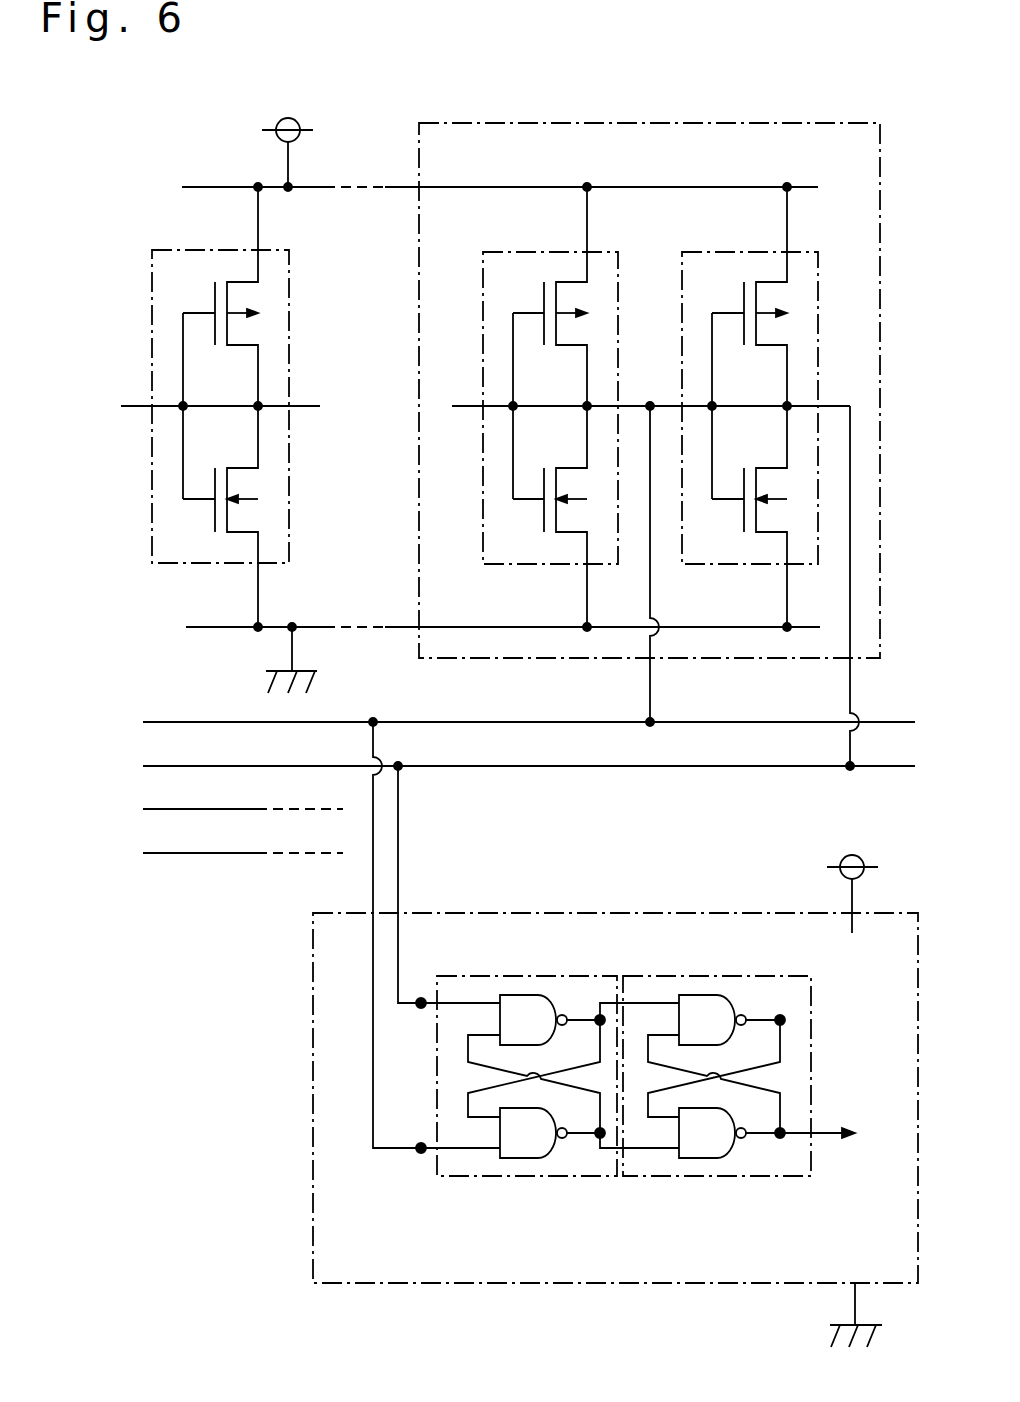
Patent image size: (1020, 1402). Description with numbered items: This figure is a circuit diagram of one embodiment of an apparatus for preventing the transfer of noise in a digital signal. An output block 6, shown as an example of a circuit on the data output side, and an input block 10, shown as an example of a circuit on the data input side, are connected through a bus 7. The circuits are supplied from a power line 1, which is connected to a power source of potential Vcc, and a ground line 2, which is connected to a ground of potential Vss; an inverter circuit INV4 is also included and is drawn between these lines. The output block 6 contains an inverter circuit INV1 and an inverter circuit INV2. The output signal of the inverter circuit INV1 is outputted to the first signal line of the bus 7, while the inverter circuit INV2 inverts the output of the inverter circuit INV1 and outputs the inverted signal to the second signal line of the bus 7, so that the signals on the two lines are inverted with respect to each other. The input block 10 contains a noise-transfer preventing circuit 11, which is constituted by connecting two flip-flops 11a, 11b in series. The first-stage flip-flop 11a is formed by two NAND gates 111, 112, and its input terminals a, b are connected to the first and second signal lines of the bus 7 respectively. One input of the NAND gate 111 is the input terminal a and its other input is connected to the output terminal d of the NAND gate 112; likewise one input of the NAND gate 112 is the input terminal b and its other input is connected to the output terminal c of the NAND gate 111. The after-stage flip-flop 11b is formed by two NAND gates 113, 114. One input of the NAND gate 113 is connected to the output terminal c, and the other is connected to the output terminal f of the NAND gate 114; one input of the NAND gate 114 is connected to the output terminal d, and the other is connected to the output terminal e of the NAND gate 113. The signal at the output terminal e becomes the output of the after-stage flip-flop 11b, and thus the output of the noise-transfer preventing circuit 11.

The power line 1 is at (302, 125).
The ground line 2 is at (313, 653).
The output block 6 is at (785, 123).
The bus 7 is at (70, 695).
The input block 10 is at (313, 1079).
The noise-transfer preventing circuit 11 is at (634, 962).
The flip-flop 11a is at (452, 985).
The flip-flop 11b is at (805, 1020).
The NAND gate 111 is at (510, 1160).
The NAND gate 112 is at (522, 995).
The NAND gate 113 is at (703, 1160).
The NAND gate 114 is at (702, 993).
The inverter circuit INV1 is at (527, 252).
The inverter circuit INV2 is at (727, 252).
The inverter circuit INV4 is at (200, 250).
The input terminal a is at (419, 1152).
The input terminal b is at (421, 1007).
The output terminal c is at (599, 1140).
The output terminal d is at (597, 1015).
The output terminal e is at (783, 1140).
The output terminal f is at (782, 1016).